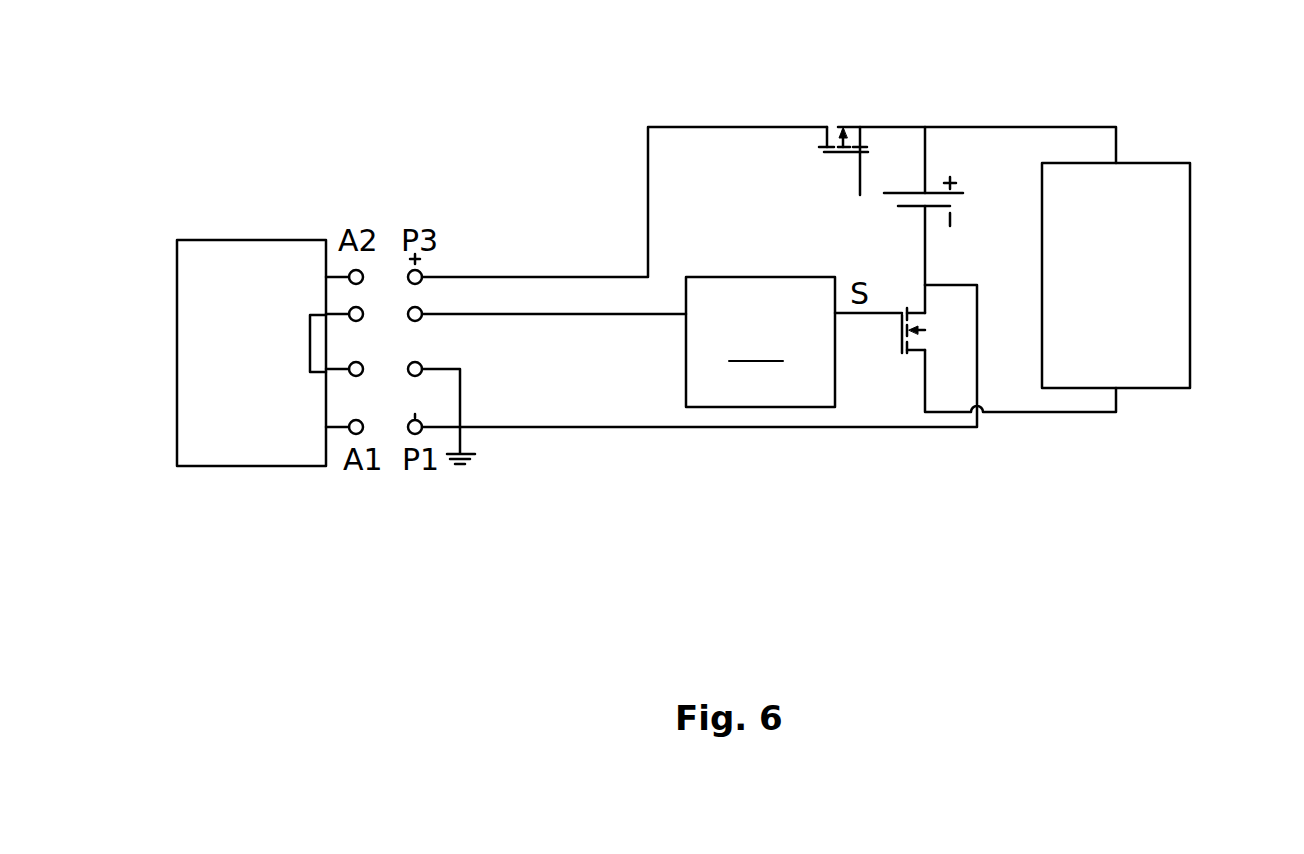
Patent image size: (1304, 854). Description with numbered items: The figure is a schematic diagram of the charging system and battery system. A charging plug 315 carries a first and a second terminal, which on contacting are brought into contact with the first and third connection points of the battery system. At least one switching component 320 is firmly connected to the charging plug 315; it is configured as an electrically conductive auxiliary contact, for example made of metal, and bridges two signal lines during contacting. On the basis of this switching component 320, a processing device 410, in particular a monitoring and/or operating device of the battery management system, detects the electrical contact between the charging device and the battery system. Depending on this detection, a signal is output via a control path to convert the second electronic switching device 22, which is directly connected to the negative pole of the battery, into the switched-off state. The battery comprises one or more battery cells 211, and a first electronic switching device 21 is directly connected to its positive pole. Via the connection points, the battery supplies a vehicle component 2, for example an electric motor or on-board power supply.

The vehicle component 2 is at (1190, 232).
The first electronic switching device 21 is at (872, 140).
The battery cell 211 is at (970, 183).
The second electronic switching device 22 is at (893, 362).
The charging plug 315 is at (237, 466).
The switching component 320 is at (346, 360).
The processing device 410 is at (760, 342).